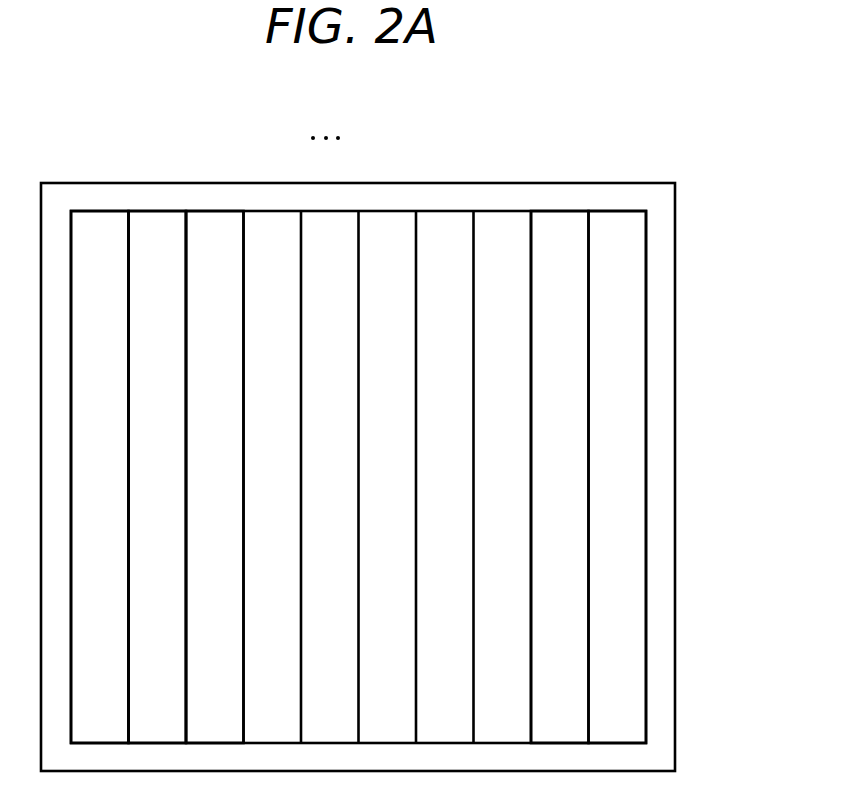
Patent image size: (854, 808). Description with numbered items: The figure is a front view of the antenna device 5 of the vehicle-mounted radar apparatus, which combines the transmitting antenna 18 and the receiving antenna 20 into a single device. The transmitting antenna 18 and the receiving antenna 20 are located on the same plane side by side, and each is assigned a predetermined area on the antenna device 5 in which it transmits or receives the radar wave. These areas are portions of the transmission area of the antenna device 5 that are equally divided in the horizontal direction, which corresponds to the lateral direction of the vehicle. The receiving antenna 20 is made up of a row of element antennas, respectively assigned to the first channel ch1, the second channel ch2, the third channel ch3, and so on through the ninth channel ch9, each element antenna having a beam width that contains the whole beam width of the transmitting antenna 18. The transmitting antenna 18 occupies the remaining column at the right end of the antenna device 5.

The antenna device 5 is at (676, 158).
The receiving antenna 20 is at (592, 125).
The transmitting antenna 18 is at (620, 227).
The channel 1 ch1 is at (99, 224).
The channel 2 ch2 is at (157, 224).
The channel 3 ch3 is at (215, 224).
The channel 9 ch9 is at (562, 224).